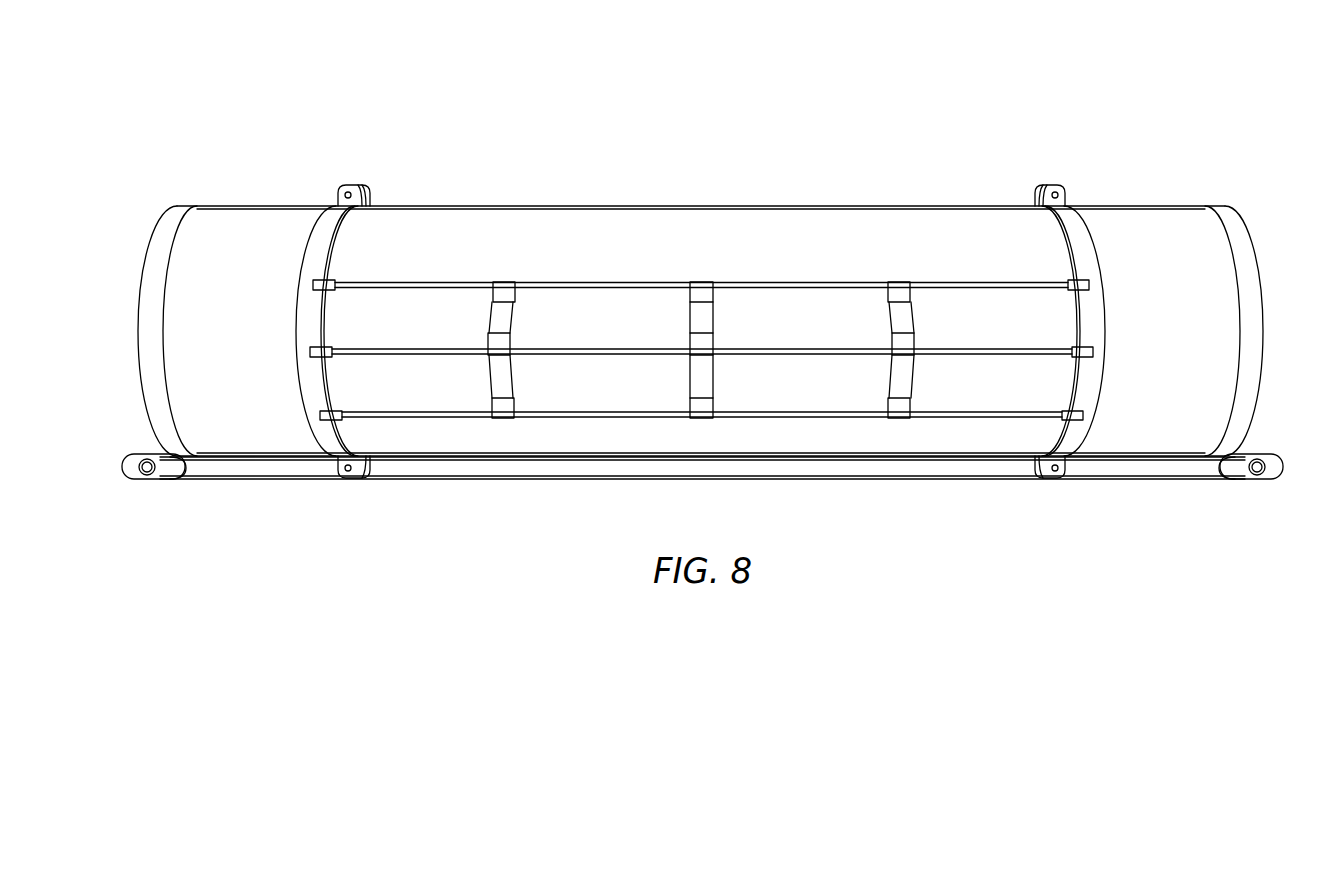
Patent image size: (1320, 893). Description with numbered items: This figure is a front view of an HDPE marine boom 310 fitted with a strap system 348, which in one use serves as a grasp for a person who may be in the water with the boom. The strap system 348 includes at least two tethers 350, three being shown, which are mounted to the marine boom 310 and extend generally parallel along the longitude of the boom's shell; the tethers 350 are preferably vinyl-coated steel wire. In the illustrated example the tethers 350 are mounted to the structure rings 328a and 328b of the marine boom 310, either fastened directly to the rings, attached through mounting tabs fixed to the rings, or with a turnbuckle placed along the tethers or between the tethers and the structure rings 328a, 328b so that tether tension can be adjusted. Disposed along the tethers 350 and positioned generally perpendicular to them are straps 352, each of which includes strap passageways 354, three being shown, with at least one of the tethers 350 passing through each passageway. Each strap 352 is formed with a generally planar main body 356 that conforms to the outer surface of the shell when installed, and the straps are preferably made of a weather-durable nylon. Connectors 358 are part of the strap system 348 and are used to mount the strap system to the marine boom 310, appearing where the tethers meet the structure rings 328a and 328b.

The HDPE marine boom 310 is at (736, 110).
The structure ring 328a is at (355, 180).
The structure ring 328b is at (1048, 179).
The strap system 348 is at (815, 254).
The tether 350 is at (612, 281).
The strap 352 is at (508, 318).
The strap passageway 354 is at (496, 348).
The main body 356 is at (503, 380).
The connector 358 is at (313, 283).